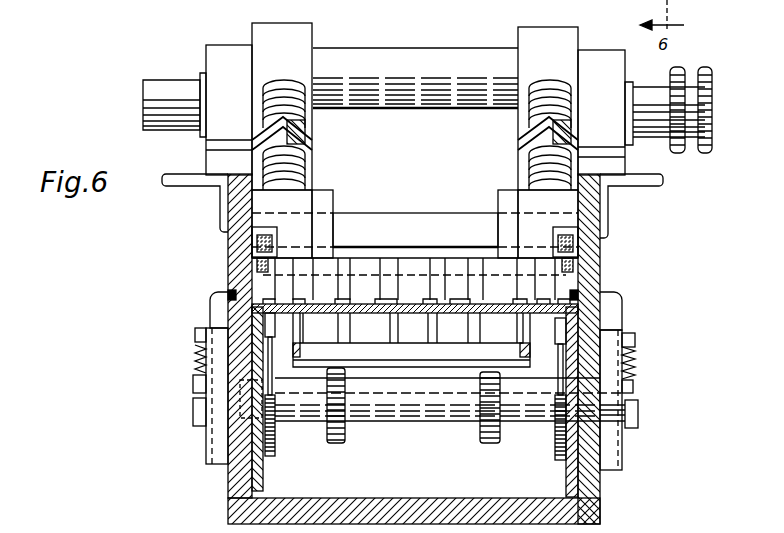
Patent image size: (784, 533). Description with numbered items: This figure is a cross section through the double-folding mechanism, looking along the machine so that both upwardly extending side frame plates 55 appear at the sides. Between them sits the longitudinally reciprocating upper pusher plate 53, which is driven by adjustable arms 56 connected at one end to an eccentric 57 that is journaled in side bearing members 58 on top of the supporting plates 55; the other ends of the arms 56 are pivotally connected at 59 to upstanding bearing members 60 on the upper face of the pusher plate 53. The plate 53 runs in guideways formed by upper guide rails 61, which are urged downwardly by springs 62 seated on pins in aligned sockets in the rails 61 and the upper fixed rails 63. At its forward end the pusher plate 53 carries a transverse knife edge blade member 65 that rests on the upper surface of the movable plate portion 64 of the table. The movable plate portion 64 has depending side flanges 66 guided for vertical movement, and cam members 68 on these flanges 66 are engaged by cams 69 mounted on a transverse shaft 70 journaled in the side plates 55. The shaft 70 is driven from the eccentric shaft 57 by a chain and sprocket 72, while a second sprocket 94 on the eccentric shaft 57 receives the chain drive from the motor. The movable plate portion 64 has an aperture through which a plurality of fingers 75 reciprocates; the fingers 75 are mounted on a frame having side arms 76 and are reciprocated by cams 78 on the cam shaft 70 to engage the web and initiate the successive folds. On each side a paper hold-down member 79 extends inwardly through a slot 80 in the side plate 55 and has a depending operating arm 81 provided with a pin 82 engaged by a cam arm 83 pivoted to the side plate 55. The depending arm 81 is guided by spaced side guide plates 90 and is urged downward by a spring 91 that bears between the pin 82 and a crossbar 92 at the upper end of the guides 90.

The upper pusher plate 53 is at (395, 290).
The side frame plates 55 is at (228, 207).
The adjustable arms 56 is at (305, 165).
The eccentric 57 is at (400, 52).
The side bearing members 58 is at (221, 54).
The pivot connection 59 is at (366, 215).
The upstanding bearing members 60 is at (500, 190).
The upper guide rails 61 is at (277, 257).
The springs 62 is at (277, 242).
The upper fixed rails 63 is at (274, 228).
The movable plate portion 64 is at (452, 290).
The knife edge blade member 65 is at (421, 290).
The depending side flanges 66 is at (252, 470).
The cam members 68 is at (216, 292).
The cams 69 is at (200, 350).
The transverse shaft 70 is at (412, 420).
The sprocket 72 is at (707, 152).
The fingers 75 is at (344, 336).
The side arms 76 is at (390, 357).
The cams 78 is at (337, 444).
The paper hold-down member 79 is at (231, 292).
The slot 80 is at (232, 298).
The depending operating arm 81 is at (213, 313).
The pin 82 is at (193, 387).
The cam arm 83 is at (193, 414).
The side guide plates 90 is at (212, 446).
The spring 91 is at (196, 360).
The crossbar 92 is at (196, 331).
The sprocket 94 is at (678, 153).